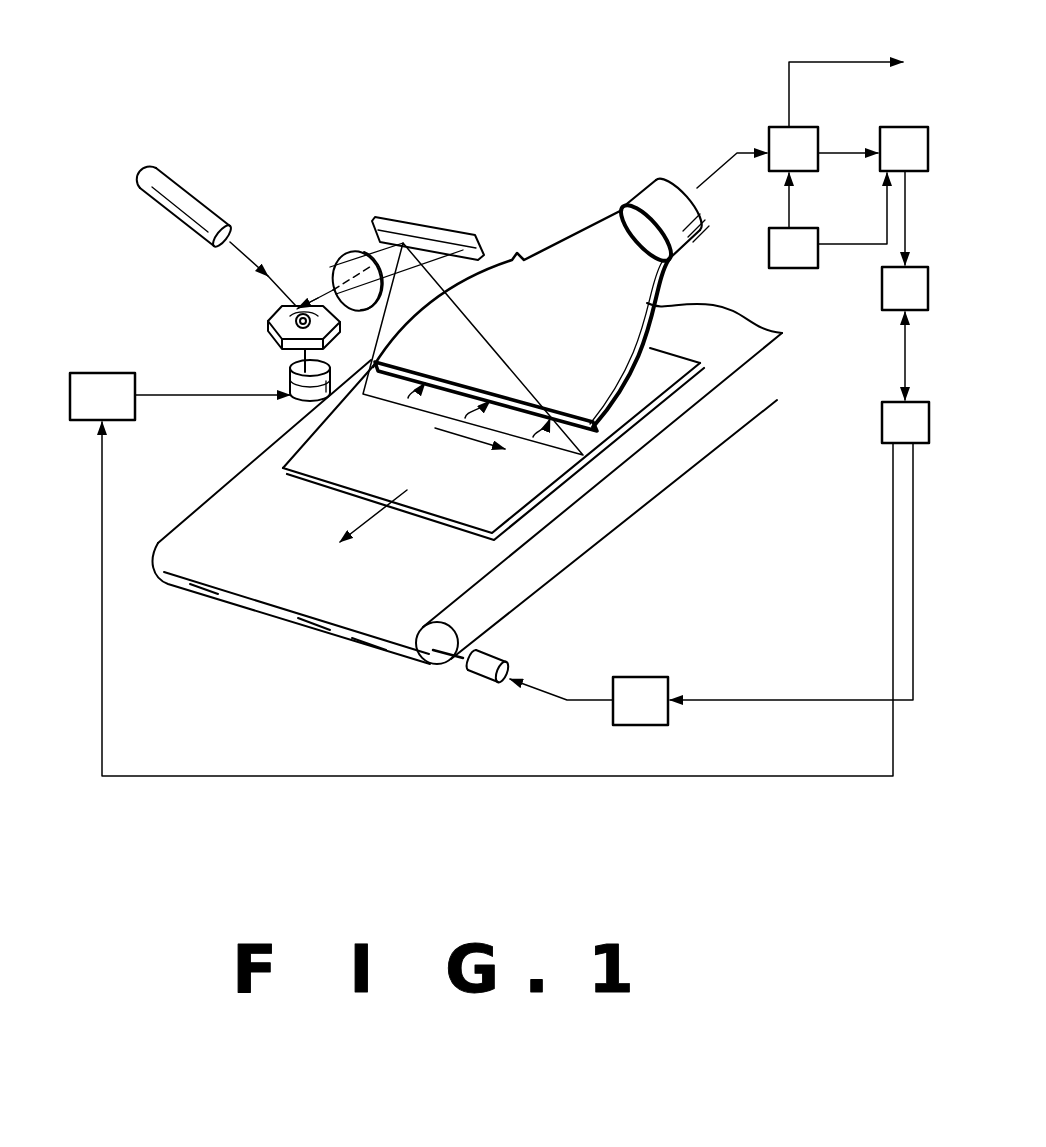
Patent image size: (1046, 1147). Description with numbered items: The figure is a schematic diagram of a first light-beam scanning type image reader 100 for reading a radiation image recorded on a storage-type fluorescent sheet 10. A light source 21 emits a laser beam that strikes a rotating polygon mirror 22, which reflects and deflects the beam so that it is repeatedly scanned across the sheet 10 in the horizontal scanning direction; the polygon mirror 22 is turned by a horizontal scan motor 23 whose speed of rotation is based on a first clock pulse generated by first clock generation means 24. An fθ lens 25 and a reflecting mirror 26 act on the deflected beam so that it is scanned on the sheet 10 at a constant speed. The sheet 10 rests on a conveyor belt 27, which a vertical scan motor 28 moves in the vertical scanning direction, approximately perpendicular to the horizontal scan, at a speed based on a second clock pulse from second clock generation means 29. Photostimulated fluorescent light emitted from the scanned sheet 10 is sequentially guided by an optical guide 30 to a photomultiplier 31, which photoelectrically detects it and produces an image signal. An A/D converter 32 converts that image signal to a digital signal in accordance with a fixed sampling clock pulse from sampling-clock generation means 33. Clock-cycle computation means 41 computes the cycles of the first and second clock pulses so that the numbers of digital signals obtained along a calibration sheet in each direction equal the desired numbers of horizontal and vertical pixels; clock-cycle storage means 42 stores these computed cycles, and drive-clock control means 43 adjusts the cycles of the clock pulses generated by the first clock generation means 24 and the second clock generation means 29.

The light-beam scanning type image reader 100 is at (390, 78).
The storage-type fluorescent sheet 10 is at (540, 504).
The light source 21 is at (212, 210).
The rotating polygon mirror 22 is at (273, 340).
The horizontal scan motor 23 is at (290, 383).
The first clock generation means 24 is at (102, 396).
The fθ lens 25 is at (347, 252).
The reflecting mirror 26 is at (443, 226).
The conveyor belt 27 is at (470, 574).
The vertical scan motor 28 is at (487, 681).
The second clock generation means 29 is at (763, 584).
The optical guide 30 is at (563, 263).
The photomultiplier (PMT) 31 is at (660, 187).
The A/D converter 32 is at (793, 149).
The sampling-clock generation means 33 is at (828, 220).
The clock-cycle computation means 41 is at (904, 149).
The clock-cycle storage means 42 is at (905, 240).
The drive-clock control means 43 is at (515, 544).